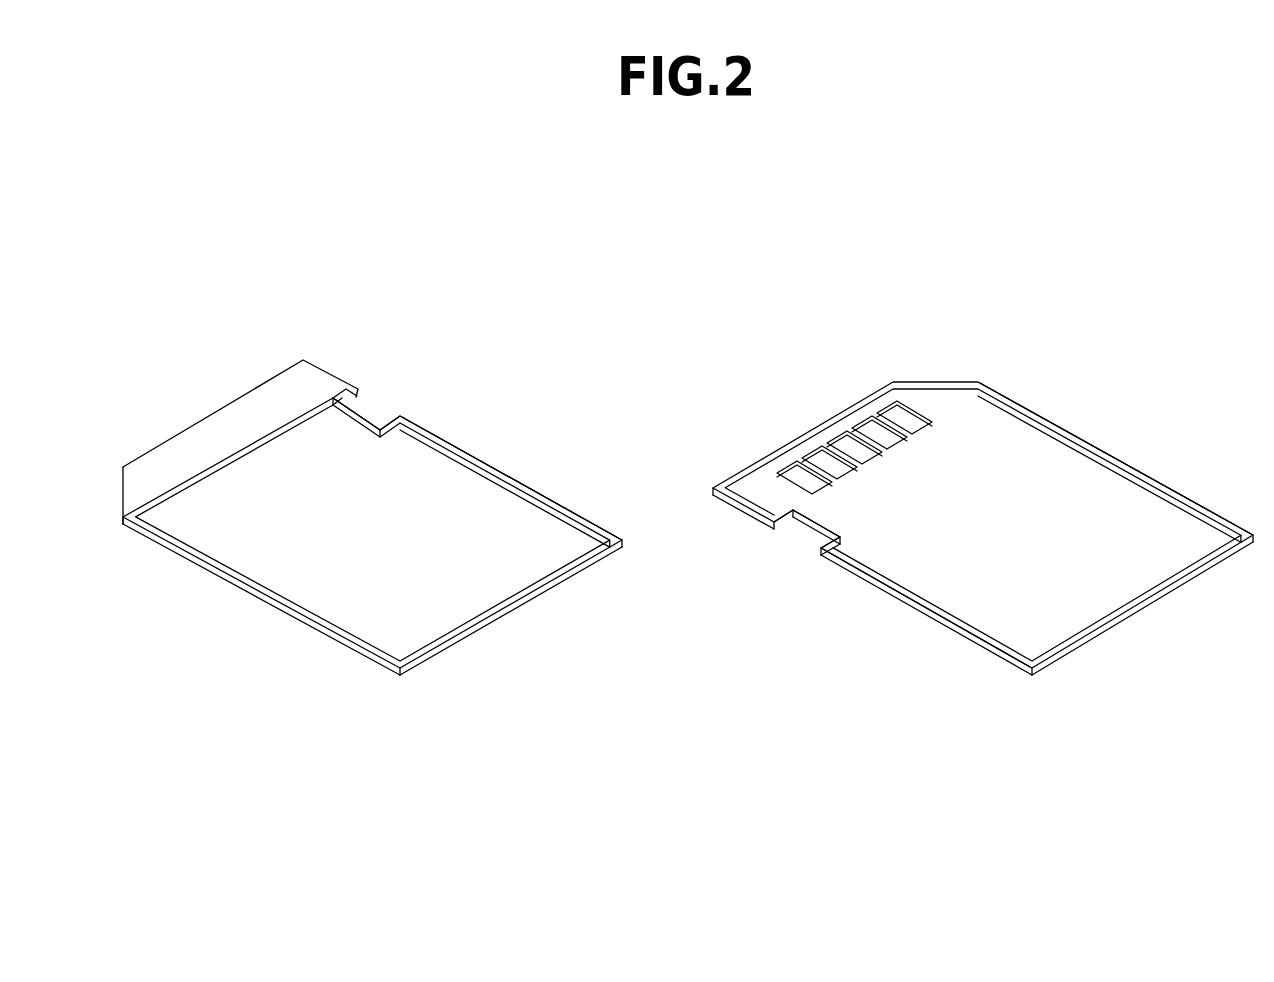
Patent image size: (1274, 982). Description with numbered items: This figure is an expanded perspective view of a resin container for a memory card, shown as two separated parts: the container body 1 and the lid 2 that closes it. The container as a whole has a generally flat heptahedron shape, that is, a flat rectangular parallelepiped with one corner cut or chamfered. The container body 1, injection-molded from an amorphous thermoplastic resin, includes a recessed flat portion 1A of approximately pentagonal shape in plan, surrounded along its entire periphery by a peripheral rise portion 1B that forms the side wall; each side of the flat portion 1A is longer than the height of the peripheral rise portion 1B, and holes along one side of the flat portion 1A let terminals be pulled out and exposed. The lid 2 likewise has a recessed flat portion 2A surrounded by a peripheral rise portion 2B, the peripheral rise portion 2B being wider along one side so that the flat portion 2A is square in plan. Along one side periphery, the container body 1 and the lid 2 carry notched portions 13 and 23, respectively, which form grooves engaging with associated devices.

The container body 1 is at (983, 494).
The flat portion 1A is at (973, 597).
The peripheral rise portion 1B is at (1079, 446).
The notched portion 13 is at (808, 530).
The lid 2 is at (372, 527).
The flat portion 2A is at (348, 615).
The peripheral rise portion 2B is at (578, 521).
The notched portion 23 is at (367, 412).